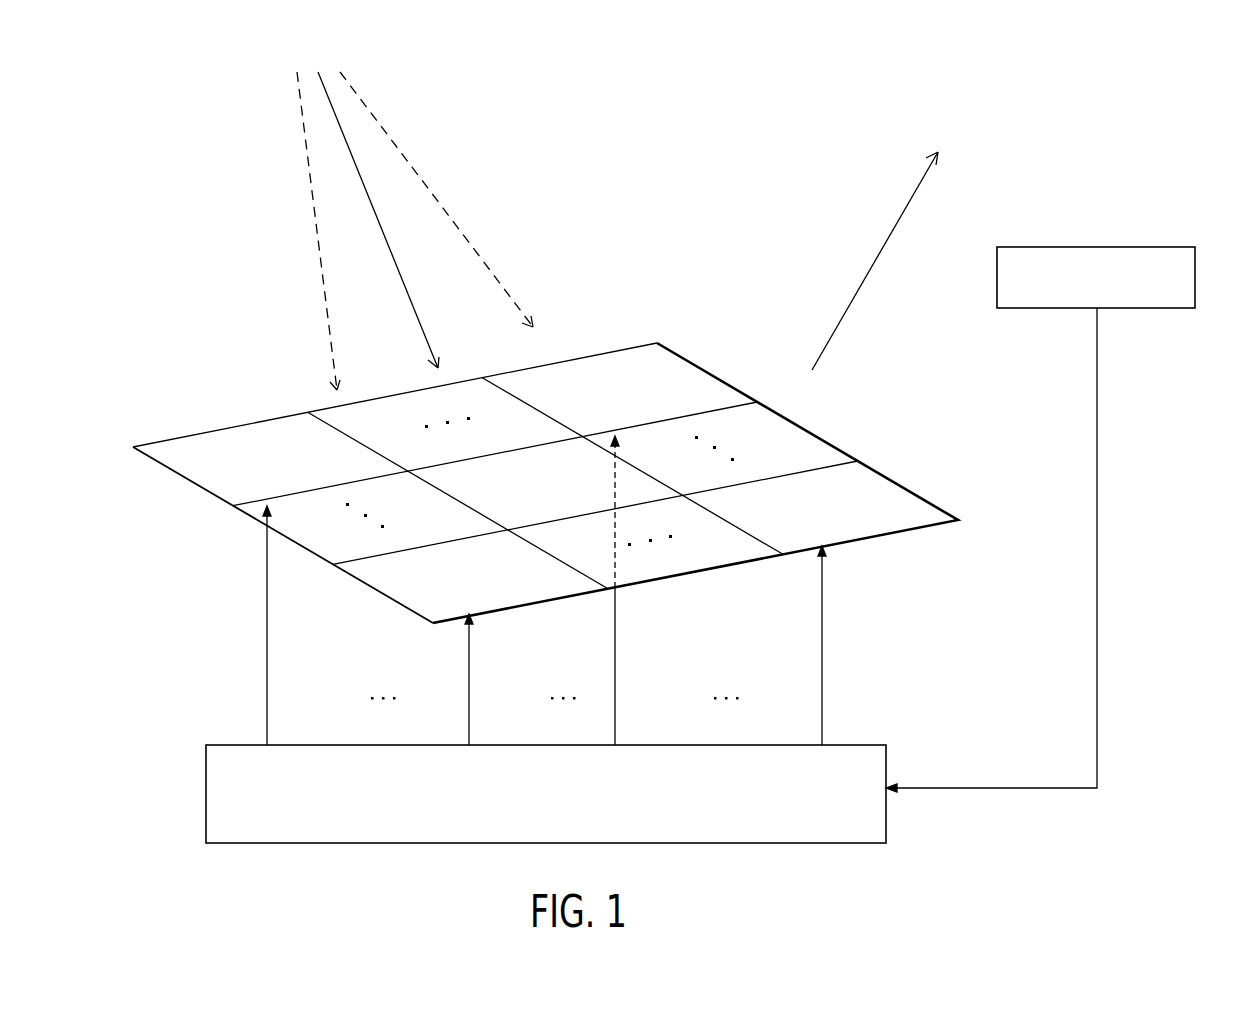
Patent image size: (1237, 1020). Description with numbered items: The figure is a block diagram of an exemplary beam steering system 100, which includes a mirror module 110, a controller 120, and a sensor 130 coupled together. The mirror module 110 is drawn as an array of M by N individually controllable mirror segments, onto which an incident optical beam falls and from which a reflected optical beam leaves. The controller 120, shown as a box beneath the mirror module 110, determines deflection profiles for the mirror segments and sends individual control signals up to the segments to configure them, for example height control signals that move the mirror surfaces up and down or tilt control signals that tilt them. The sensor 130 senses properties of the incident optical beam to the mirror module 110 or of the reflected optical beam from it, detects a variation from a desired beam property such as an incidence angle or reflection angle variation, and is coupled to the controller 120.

The beam steering system 100 is at (1040, 137).
The mirror module 110 is at (813, 455).
The controller 120 is at (877, 745).
The sensor 130 is at (1157, 247).